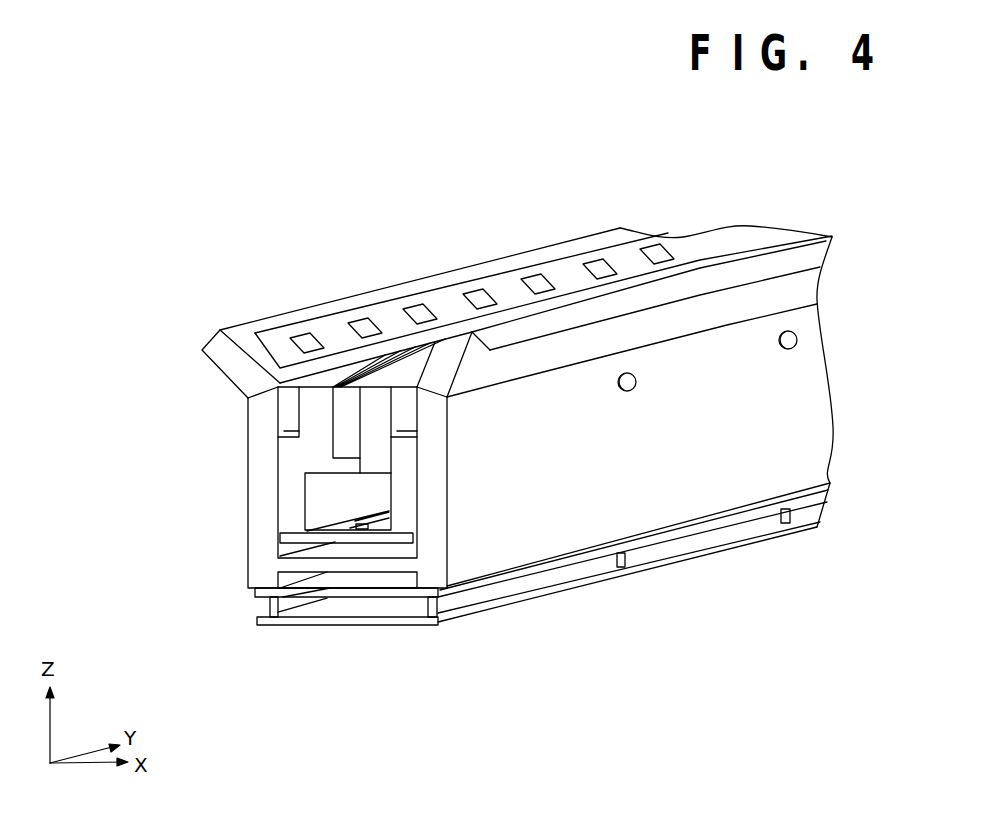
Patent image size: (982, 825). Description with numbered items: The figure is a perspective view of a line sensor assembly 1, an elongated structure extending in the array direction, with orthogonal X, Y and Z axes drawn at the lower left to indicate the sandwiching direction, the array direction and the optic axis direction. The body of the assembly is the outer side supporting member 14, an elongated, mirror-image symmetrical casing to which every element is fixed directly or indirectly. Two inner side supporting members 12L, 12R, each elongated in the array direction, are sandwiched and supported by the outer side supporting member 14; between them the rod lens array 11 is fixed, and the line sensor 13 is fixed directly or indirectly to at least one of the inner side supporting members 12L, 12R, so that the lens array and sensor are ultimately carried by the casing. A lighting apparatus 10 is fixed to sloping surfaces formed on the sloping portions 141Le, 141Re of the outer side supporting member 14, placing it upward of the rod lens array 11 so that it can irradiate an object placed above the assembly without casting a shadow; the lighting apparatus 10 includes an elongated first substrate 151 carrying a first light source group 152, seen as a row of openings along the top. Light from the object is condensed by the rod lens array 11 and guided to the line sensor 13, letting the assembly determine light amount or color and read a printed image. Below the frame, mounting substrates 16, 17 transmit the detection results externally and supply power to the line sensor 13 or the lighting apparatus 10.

The line sensor assembly 1 is at (186, 178).
The lighting apparatus 10 is at (445, 206).
The rod lens array 11 is at (343, 448).
The inner side supporting member 12L is at (293, 462).
The inner side supporting member 12R is at (398, 452).
The line sensor 13 is at (350, 547).
The outer side supporting member 14 is at (650, 505).
The mounting substrate 16 is at (253, 592).
The mounting substrate 17 is at (273, 628).
The sloping portion 141Le is at (217, 329).
The sloping portion 141Re is at (779, 265).
The first substrate 151 is at (268, 332).
The first light source group 152 is at (305, 340).